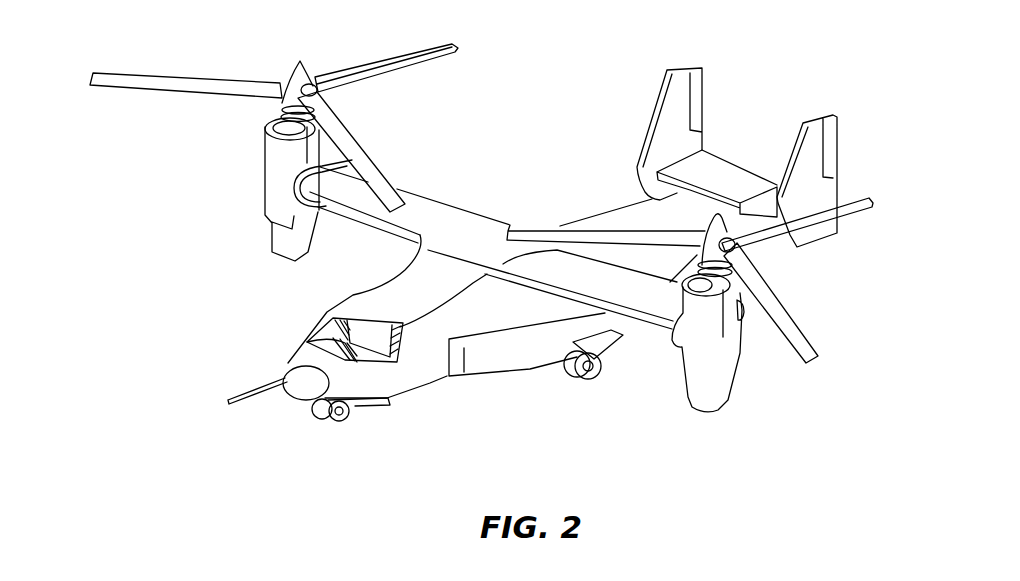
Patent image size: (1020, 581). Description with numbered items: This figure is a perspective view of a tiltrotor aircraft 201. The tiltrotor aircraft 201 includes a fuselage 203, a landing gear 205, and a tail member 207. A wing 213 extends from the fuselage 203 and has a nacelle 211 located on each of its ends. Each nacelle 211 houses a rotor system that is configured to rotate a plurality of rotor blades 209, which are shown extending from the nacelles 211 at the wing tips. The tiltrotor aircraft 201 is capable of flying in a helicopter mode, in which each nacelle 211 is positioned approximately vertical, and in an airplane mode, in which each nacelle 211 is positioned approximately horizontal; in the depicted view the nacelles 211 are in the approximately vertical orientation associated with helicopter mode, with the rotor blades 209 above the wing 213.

The tiltrotor aircraft 201 is at (544, 93).
The fuselage 203 is at (425, 347).
The landing gear 205 is at (588, 383).
The tail member 207 is at (735, 182).
The rotor blades 209 is at (197, 92).
The nacelle 211 is at (268, 218).
The wing 213 is at (435, 195).